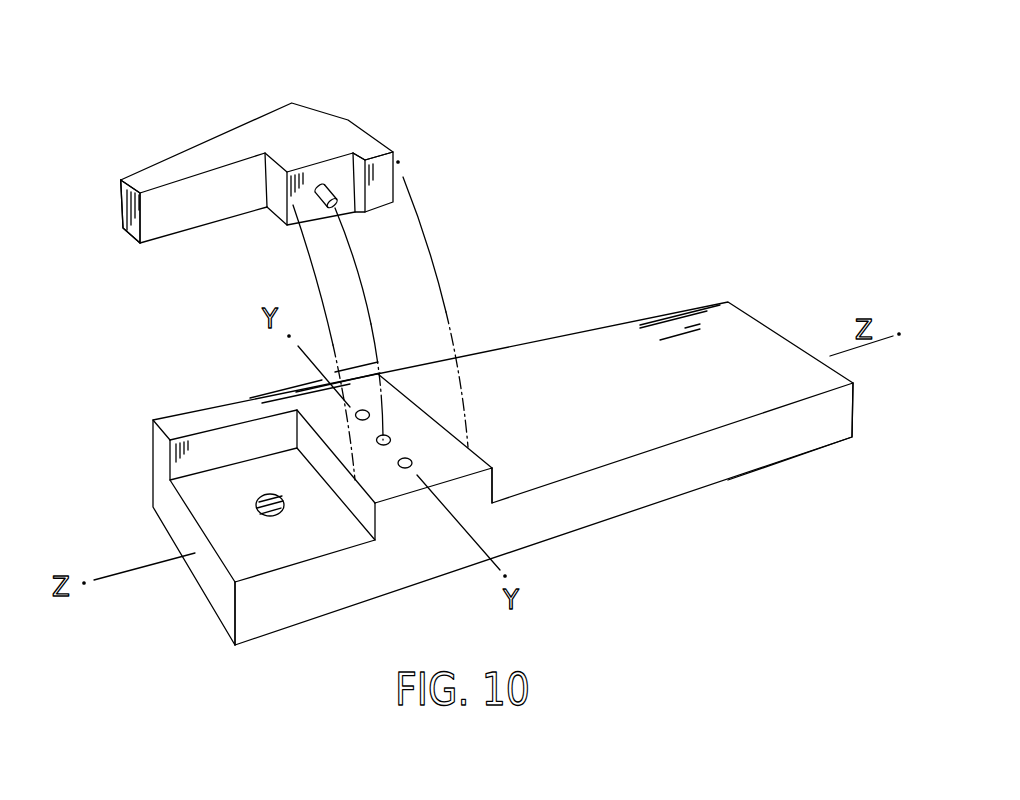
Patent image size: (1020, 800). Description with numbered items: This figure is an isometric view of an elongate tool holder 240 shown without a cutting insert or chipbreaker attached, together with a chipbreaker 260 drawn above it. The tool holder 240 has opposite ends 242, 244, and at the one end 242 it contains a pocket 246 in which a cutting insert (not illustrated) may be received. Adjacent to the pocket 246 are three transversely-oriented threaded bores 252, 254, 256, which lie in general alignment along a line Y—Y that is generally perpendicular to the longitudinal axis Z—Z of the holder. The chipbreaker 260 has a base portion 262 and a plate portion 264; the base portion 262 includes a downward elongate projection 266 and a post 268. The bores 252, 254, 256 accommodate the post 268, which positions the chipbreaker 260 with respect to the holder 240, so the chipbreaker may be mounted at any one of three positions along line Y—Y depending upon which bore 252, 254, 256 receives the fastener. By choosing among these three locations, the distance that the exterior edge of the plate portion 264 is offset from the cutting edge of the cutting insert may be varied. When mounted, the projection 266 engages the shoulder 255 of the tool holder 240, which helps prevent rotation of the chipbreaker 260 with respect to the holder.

The elongate tool holder 240 is at (522, 474).
The end of tool holder 242 is at (226, 628).
The end of tool holder 244 is at (852, 416).
The pocket 246 is at (237, 561).
The threaded bore 252 is at (363, 409).
The threaded bore 254 is at (390, 435).
The shoulder 255 is at (492, 485).
The threaded bore 256 is at (413, 461).
The chipbreaker 260 is at (293, 135).
The base portion 262 is at (320, 125).
The plate portion 264 is at (150, 177).
The downward elongate projection 266 is at (377, 172).
The post 268 is at (336, 208).